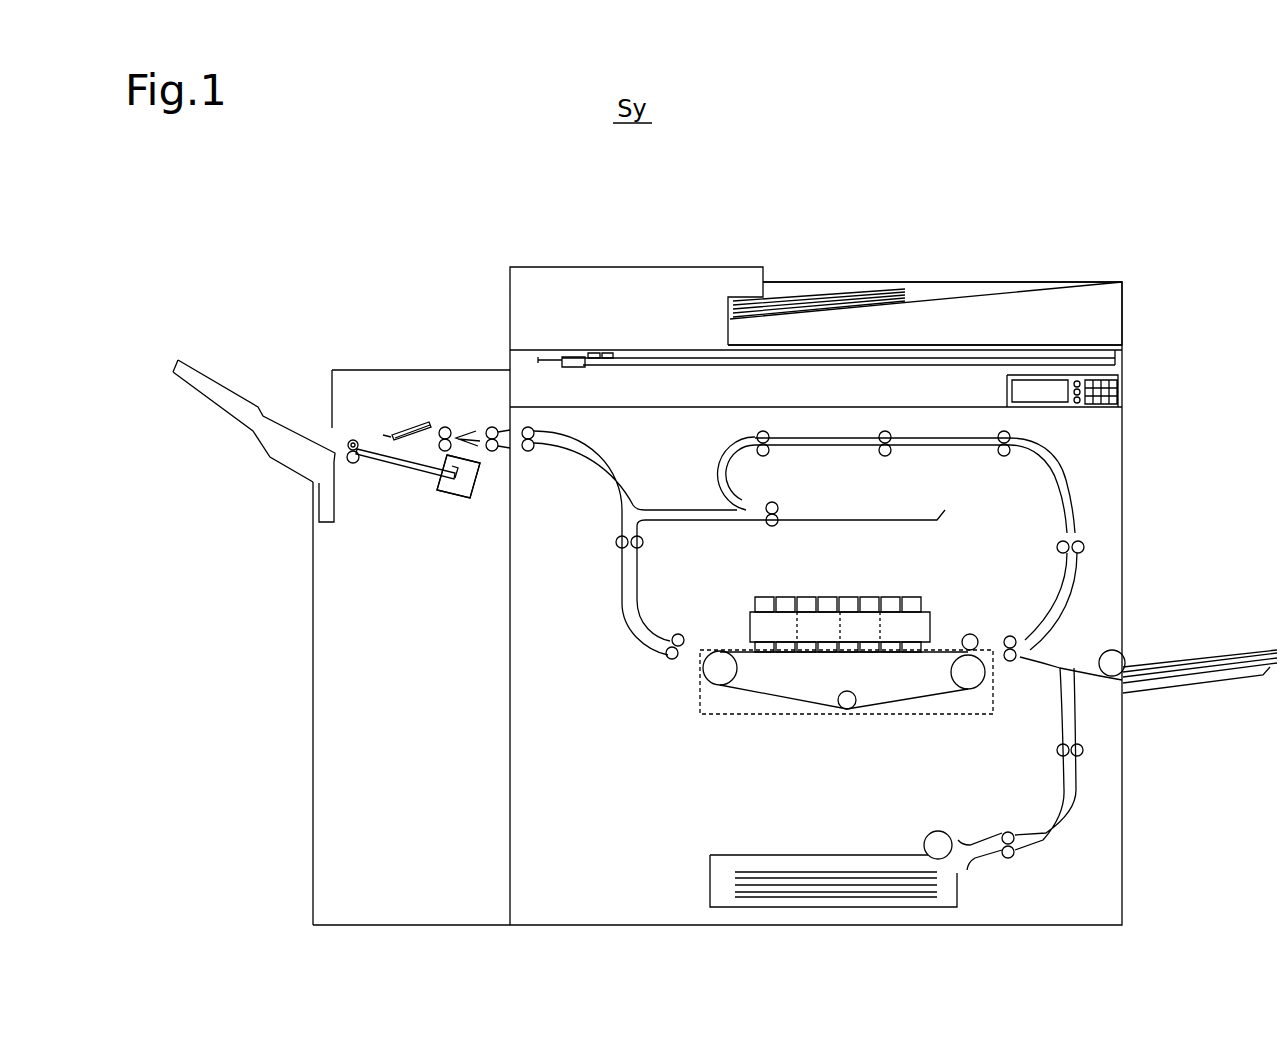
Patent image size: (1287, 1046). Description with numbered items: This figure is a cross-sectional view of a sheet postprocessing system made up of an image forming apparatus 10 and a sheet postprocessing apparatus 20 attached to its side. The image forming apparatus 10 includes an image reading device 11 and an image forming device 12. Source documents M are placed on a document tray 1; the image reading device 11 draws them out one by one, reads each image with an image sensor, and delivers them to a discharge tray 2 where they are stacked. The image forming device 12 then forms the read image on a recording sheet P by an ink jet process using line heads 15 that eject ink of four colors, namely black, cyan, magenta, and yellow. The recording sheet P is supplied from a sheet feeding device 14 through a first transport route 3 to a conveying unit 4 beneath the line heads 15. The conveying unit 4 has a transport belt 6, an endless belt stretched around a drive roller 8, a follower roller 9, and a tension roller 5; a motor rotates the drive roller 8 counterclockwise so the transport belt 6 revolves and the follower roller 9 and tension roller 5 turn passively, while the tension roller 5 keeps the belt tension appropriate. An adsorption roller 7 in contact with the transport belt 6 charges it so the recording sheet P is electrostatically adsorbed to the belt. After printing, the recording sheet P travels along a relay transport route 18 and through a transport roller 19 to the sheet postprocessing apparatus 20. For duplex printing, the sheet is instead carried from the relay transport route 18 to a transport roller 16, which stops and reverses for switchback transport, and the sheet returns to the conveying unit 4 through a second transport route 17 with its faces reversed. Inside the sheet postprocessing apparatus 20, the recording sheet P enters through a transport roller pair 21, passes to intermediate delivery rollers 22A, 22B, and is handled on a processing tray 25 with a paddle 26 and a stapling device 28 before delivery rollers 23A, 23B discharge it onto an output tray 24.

The image forming apparatus 10 is at (793, 226).
The document tray 1 is at (928, 300).
The discharge tray 2 is at (962, 345).
The source document M is at (838, 292).
The image reading device 11 is at (1135, 310).
The sheet postprocessing apparatus 20 is at (360, 245).
The output tray 24 is at (216, 380).
The delivery roller 23A is at (350, 440).
The delivery roller 23B is at (354, 463).
The processing tray 25 is at (380, 458).
The intermediate delivery roller 22B is at (438, 460).
The stapling device 28 is at (455, 498).
The paddle 26 is at (392, 425).
The intermediate delivery roller 22A is at (443, 427).
The transport roller pair 21 is at (492, 427).
The transport roller 19 is at (528, 427).
The relay transport route 18 is at (618, 495).
The transport roller 16 is at (776, 500).
The second transport route 17 is at (1058, 507).
The follower roller 9 is at (962, 690).
The first transport route 3 is at (1057, 836).
The sheet feeding device 14 is at (680, 860).
The recording sheet P is at (782, 872).
The image forming device 12 is at (622, 677).
The conveying unit 4 is at (735, 716).
The drive roller 8 is at (697, 695).
The transport belt 6 is at (790, 701).
The tension roller 5 is at (841, 708).
The adsorption roller 7 is at (972, 634).
The line head 15 is at (905, 597).